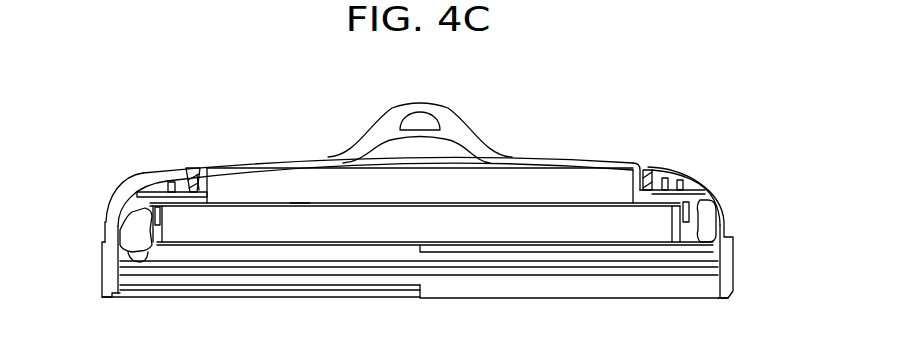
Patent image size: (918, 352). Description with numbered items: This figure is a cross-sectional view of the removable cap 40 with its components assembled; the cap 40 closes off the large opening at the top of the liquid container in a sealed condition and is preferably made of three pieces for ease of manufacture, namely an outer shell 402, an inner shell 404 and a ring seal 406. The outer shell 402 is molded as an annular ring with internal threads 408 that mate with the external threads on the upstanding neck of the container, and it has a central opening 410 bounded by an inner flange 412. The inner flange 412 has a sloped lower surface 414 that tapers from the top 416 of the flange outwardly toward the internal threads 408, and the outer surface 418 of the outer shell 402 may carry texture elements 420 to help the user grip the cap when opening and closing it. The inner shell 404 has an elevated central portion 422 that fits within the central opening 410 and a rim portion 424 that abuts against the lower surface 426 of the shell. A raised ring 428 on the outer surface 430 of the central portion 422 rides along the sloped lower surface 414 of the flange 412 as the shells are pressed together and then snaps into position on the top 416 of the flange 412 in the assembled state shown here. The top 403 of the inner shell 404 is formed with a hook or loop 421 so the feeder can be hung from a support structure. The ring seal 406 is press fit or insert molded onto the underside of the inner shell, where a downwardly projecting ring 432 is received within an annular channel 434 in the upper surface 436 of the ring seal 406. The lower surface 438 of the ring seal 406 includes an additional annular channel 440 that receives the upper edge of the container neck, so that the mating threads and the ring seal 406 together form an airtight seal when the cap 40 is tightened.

The removable cap 40 is at (688, 78).
The outer shell 402 is at (728, 212).
The top of the inner shell 403 is at (470, 142).
The inner shell 404 is at (582, 160).
The ring seal 406 is at (730, 225).
The internal threads 408 is at (717, 273).
The central opening 410 is at (190, 168).
The inner flange 412 is at (170, 174).
The sloped lower surface 414 is at (208, 190).
The top of the flange 416 is at (200, 178).
The outer surface 418 is at (107, 224).
The texture elements 420 is at (103, 253).
The hook or loop 421 is at (432, 112).
The elevated central portion 422 is at (616, 166).
The rim portion 424 is at (688, 188).
The lower surface 426 is at (727, 203).
The raised ring 428 is at (665, 172).
The outer surface of the central portion 430 is at (648, 168).
The downwardly projecting ring 432 is at (142, 212).
The annular channel 434 is at (153, 243).
The upper surface 436 is at (298, 203).
The lower surface of the ring seal 438 is at (247, 243).
The additional annular channel 440 is at (140, 265).